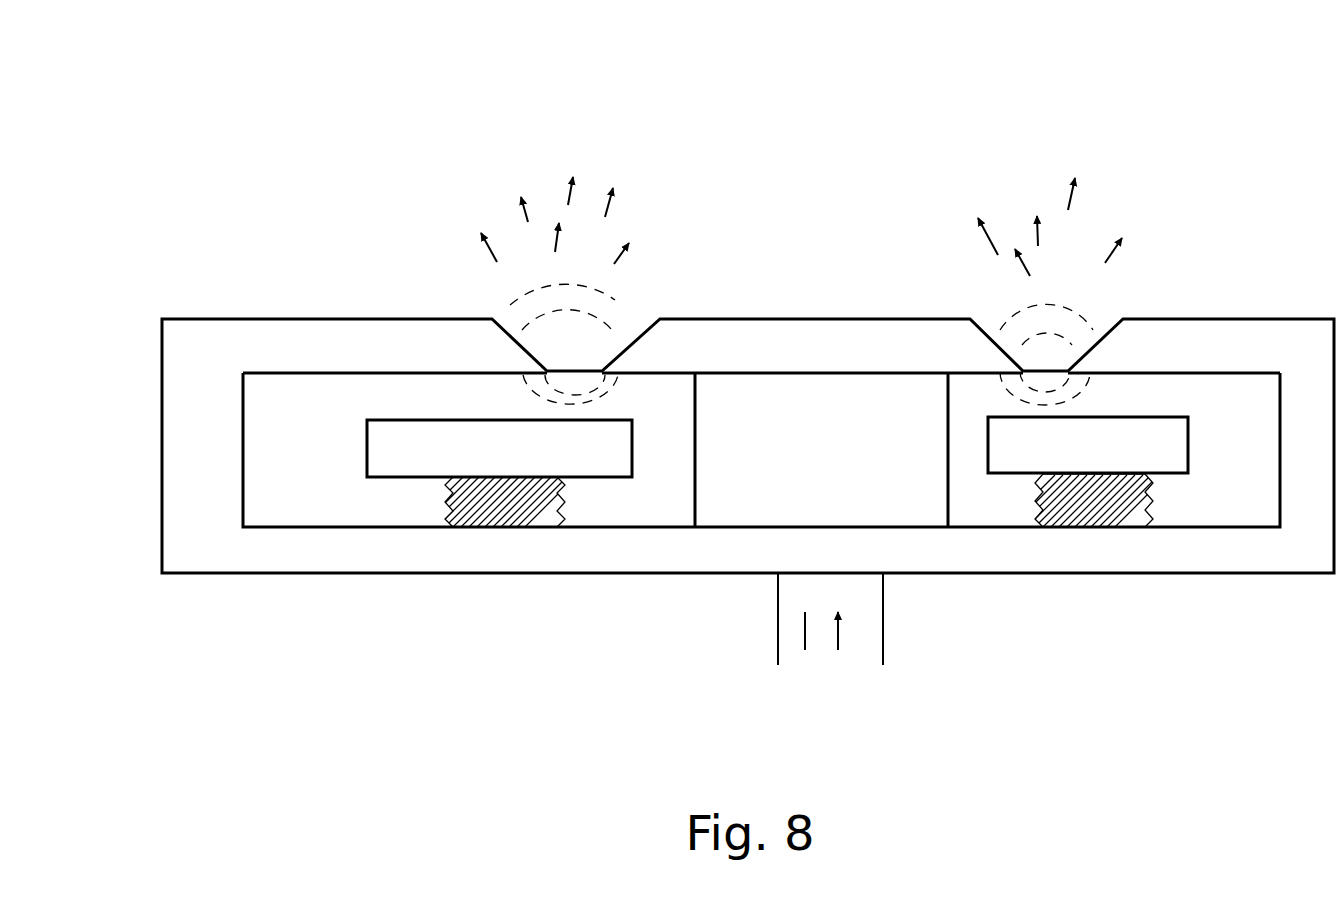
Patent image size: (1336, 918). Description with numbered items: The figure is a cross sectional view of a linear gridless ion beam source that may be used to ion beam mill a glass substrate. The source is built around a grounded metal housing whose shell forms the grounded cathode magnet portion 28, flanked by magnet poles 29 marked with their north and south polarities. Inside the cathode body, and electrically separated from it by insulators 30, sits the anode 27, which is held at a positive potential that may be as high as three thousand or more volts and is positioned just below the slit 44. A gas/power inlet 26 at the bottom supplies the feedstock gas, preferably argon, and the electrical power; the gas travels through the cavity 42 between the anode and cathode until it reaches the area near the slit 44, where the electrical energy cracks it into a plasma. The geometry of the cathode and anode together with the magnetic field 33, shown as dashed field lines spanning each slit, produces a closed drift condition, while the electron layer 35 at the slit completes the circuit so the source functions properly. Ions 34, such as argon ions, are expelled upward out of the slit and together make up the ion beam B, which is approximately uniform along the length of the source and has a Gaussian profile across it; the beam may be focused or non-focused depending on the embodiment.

The gas/power inlet 26 is at (778, 607).
The anode 27 is at (372, 445).
The grounded cathode magnet portion 28 is at (918, 398).
The magnet poles 29 is at (318, 333).
The insulators 30 is at (515, 513).
The magnetic field 33 is at (610, 330).
The ions 34 is at (492, 248).
The electron layer 35 is at (602, 375).
The cavity 42 is at (272, 404).
The slit 44 is at (515, 298).
The ion beam B is at (640, 130).